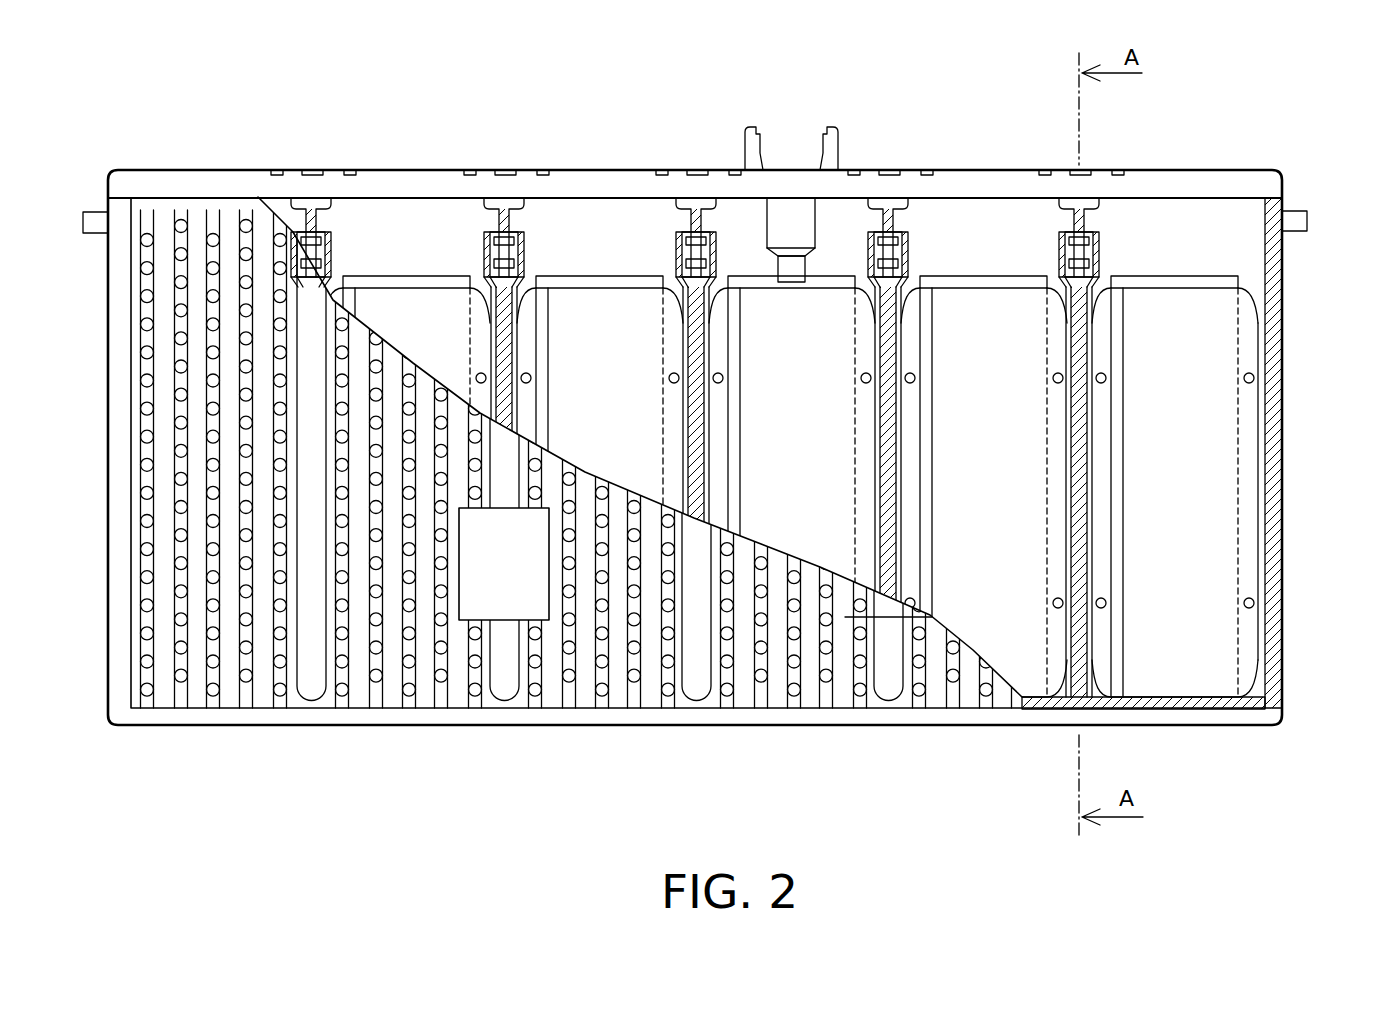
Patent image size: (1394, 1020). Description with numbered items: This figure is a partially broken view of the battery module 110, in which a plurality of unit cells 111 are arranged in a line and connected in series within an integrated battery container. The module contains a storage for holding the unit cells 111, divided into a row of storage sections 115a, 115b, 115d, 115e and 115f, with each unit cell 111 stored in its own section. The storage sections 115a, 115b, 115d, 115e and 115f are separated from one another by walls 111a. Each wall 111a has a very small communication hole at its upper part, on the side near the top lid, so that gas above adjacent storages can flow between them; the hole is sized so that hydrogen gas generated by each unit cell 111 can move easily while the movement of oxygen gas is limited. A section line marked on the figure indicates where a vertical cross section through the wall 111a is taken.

The battery module 110 is at (1225, 168).
The unit cell 111 is at (763, 452).
The wall 111a is at (1085, 220).
The storage section 115a is at (1145, 255).
The storage section 115b is at (954, 255).
The storage section 115d is at (570, 255).
The storage section 115e is at (377, 255).
The storage section 115f is at (281, 212).